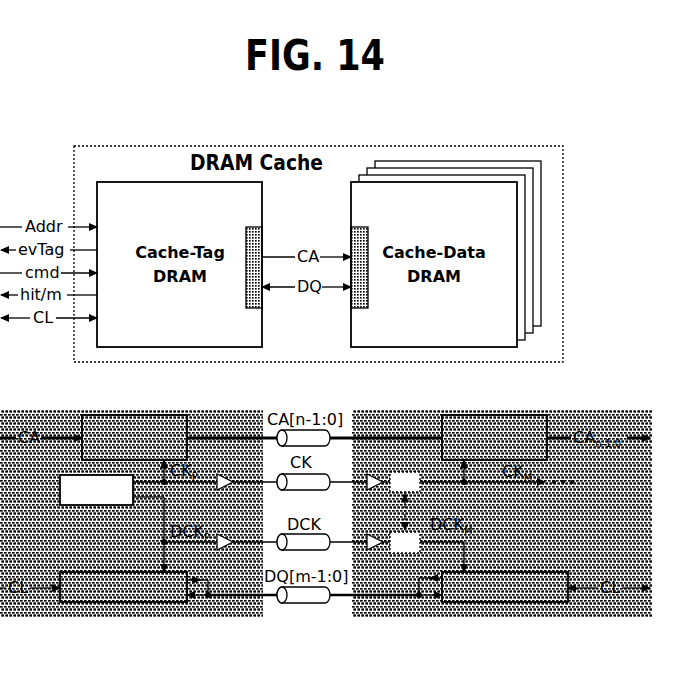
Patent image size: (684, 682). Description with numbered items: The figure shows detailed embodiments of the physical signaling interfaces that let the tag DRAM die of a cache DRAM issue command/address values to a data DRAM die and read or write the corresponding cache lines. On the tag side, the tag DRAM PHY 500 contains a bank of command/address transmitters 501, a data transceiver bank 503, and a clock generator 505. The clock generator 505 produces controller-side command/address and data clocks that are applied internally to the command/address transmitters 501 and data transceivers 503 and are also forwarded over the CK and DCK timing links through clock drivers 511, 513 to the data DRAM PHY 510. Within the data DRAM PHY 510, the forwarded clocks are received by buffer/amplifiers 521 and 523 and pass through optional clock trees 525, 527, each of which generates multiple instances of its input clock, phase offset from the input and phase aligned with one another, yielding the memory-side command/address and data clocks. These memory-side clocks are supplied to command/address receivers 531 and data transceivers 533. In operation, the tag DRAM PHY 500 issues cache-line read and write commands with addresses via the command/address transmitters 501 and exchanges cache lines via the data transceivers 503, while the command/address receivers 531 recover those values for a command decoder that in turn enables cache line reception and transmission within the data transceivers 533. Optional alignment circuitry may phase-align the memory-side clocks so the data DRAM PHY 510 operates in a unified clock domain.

The tag DRAM PHY 500 is at (254, 308).
The data DRAM PHY 510 is at (358, 308).
The command/address transmitters 501 is at (187, 445).
The data transceivers 503 is at (138, 571).
The clock generator 505 is at (100, 505).
The clock driver 511 is at (225, 489).
The clock driver 513 is at (225, 549).
The buffer/amplifier 521 is at (377, 473).
The buffer/amplifier 523 is at (377, 533).
The clock tree 525 is at (420, 491).
The clock tree 527 is at (408, 553).
The command/address receivers 531 is at (442, 448).
The data transceivers 533 is at (490, 572).